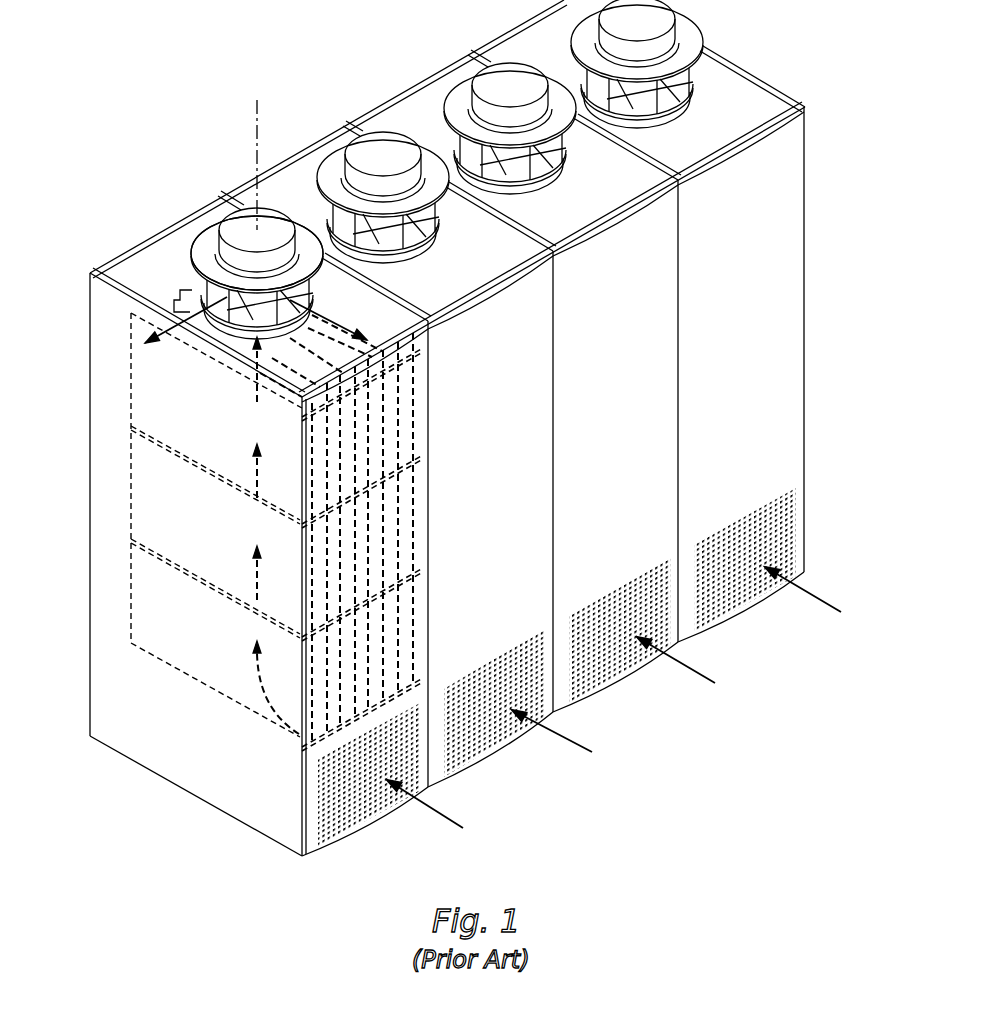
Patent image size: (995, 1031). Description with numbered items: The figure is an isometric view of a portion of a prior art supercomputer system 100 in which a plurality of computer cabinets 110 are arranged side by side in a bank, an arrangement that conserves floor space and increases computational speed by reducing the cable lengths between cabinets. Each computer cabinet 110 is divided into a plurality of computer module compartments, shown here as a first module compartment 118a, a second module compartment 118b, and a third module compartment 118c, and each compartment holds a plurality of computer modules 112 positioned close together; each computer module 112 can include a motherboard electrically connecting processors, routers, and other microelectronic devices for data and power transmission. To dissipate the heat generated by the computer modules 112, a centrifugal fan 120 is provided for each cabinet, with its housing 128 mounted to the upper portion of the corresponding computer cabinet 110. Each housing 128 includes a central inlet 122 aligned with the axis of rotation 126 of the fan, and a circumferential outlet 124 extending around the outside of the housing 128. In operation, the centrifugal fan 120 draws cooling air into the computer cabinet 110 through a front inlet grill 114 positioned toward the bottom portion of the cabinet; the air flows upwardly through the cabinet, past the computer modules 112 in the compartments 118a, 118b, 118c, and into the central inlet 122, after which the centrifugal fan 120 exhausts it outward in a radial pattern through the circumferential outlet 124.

The prior art supercomputer system 100 is at (162, 60).
The computer cabinet 110 is at (390, 445).
The computer module 112 is at (353, 542).
The front inlet grill 114 is at (350, 803).
The first module compartment 118a is at (392, 680).
The second module compartment 118b is at (392, 568).
The third module compartment 118c is at (392, 457).
The centrifugal fan 120 is at (241, 227).
The central inlet 122 is at (237, 367).
The circumferential outlet 124 is at (190, 296).
The axis of rotation 126 is at (257, 104).
The housing 128 is at (303, 237).